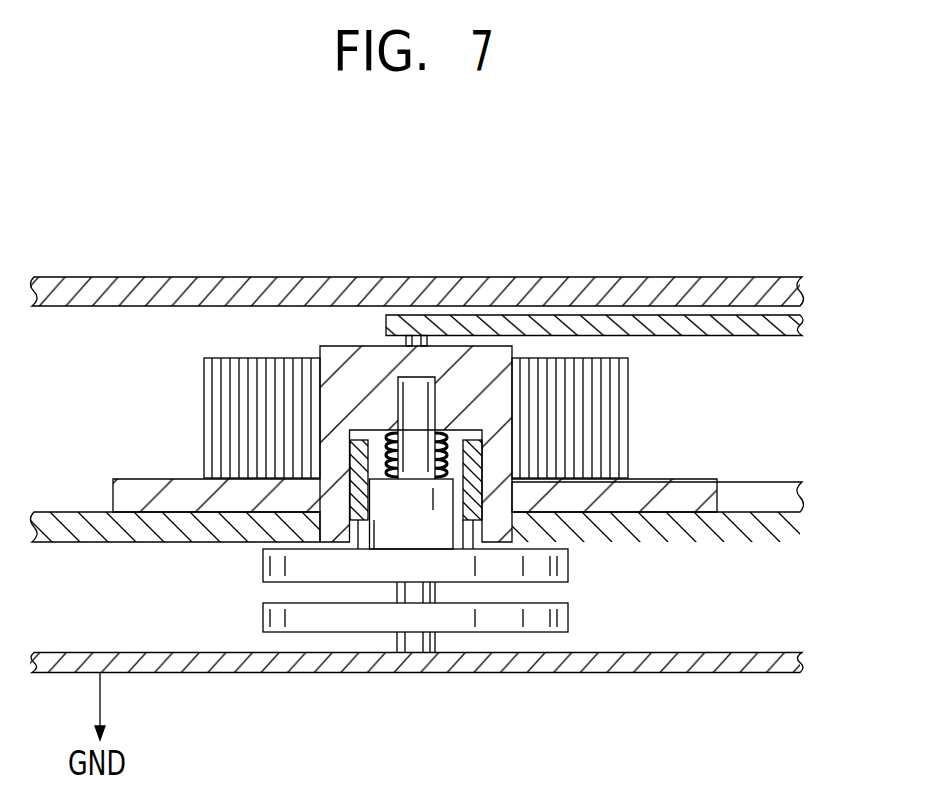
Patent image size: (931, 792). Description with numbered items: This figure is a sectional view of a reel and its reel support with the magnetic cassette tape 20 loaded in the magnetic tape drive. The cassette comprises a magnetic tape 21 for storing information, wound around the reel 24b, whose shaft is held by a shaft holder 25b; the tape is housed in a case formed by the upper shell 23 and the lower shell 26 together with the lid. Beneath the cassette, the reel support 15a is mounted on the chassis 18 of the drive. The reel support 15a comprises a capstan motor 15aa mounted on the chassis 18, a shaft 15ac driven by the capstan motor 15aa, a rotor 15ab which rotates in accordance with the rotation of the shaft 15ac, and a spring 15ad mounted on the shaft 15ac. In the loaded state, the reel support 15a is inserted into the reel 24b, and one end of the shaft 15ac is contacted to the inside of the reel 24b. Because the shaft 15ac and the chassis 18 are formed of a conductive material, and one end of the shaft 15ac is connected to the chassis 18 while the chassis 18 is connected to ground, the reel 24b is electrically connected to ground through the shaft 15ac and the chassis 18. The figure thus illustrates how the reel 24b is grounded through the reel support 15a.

The magnetic cassette tape 20 is at (759, 226).
The upper shell 23 is at (101, 290).
The shaft holder 25b is at (757, 336).
The reel 24b is at (348, 385).
The magnetic tape 21 is at (628, 408).
The shaft 15ac is at (425, 410).
The spring 15ad is at (455, 482).
The rotor 15ab is at (383, 520).
The capstan motor 15aa is at (574, 549).
The reel support 15a is at (233, 587).
The lower shell 26 is at (788, 517).
The chassis 18 is at (735, 673).